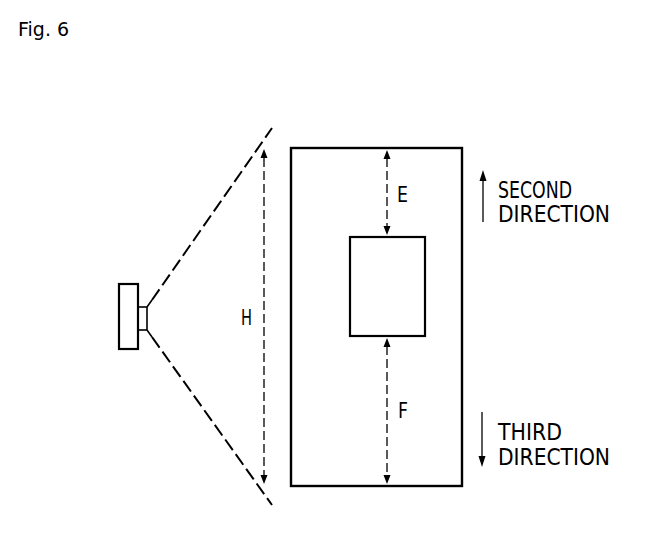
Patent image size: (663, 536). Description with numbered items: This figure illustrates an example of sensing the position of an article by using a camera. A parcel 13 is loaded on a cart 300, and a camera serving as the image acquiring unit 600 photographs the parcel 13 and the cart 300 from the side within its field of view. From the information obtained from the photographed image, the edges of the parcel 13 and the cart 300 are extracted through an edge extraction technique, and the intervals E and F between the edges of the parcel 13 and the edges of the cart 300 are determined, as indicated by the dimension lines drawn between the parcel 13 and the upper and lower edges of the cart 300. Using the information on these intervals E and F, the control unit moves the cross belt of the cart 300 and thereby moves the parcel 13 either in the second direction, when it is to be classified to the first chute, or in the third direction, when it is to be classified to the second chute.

The image acquiring unit 600 is at (118, 314).
The cart 300 is at (332, 158).
The parcel 13 is at (415, 288).